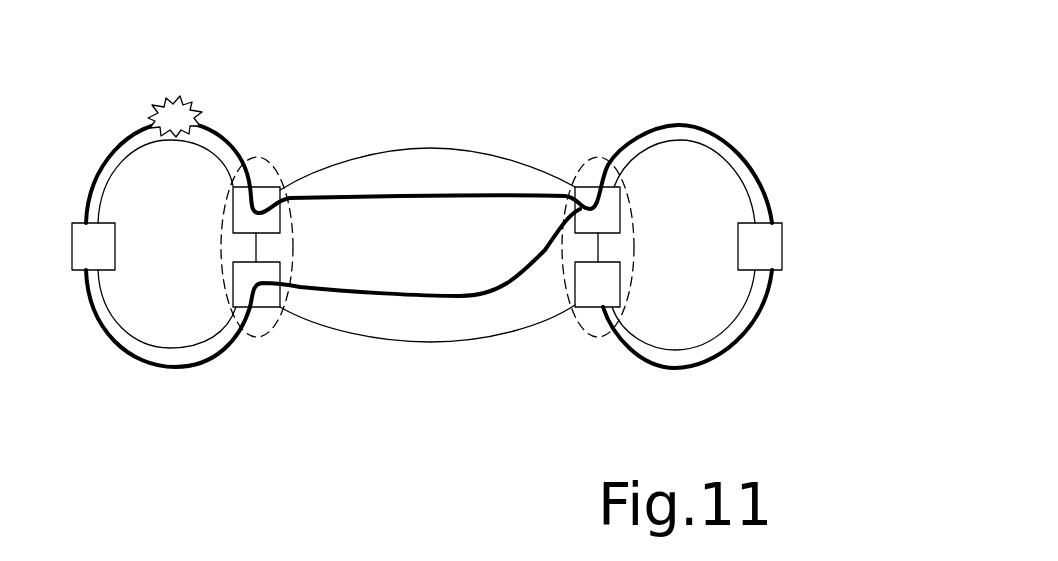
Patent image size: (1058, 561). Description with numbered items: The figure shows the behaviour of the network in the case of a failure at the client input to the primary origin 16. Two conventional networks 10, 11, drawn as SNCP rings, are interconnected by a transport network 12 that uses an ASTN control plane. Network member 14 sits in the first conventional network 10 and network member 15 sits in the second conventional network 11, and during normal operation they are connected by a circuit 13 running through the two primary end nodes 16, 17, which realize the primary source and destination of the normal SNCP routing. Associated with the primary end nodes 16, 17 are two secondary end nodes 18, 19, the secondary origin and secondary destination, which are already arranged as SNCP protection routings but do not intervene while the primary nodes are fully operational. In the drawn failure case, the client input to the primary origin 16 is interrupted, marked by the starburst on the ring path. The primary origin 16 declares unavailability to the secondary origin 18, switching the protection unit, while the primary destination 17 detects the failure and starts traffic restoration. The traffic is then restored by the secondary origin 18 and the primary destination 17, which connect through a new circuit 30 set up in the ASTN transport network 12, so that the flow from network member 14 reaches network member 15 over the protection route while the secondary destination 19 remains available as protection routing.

The conventional network 10 is at (173, 345).
The conventional network 11 is at (672, 342).
The transport network 12 is at (446, 338).
The circuit 13 is at (393, 194).
The network member 14 is at (78, 270).
The network member 15 is at (772, 270).
The primary end node 16 is at (265, 193).
The primary end node 17 is at (590, 193).
The secondary end node 18 is at (263, 298).
The secondary end node 19 is at (600, 300).
The circuit 30 is at (363, 295).